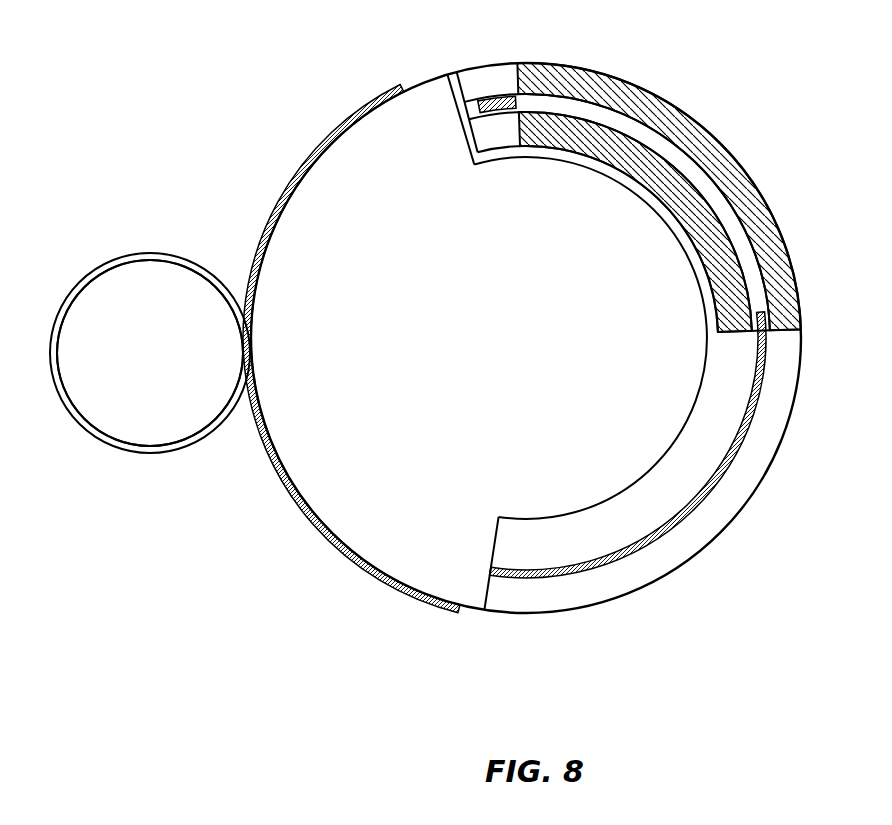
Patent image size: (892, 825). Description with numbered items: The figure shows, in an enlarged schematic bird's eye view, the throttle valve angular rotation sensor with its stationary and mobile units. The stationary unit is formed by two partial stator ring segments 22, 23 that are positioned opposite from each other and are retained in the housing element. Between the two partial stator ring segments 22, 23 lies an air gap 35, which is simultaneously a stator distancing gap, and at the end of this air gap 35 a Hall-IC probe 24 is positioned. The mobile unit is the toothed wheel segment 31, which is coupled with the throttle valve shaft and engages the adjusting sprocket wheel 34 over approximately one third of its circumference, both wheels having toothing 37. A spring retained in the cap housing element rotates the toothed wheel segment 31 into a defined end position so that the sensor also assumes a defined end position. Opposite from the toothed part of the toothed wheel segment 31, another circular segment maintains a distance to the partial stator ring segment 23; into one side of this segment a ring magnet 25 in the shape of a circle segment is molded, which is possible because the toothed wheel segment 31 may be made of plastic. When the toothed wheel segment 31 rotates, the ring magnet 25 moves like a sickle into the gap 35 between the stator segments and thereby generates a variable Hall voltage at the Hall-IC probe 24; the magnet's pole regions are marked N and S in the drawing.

The partial stator ring segment 22 is at (705, 138).
The partial stator ring segment 23 is at (712, 223).
The Hall-IC probe (ASIC) 24 is at (485, 95).
The ring magnet 25 is at (737, 445).
The toothed wheel segment 31 is at (413, 525).
The adjusting sprocket wheel 34 is at (118, 397).
The air gap 35 is at (598, 113).
The toothing 37 is at (327, 532).
The nip side / north pole region N is at (790, 288).
The end of conductive layer / south pole region S is at (495, 573).